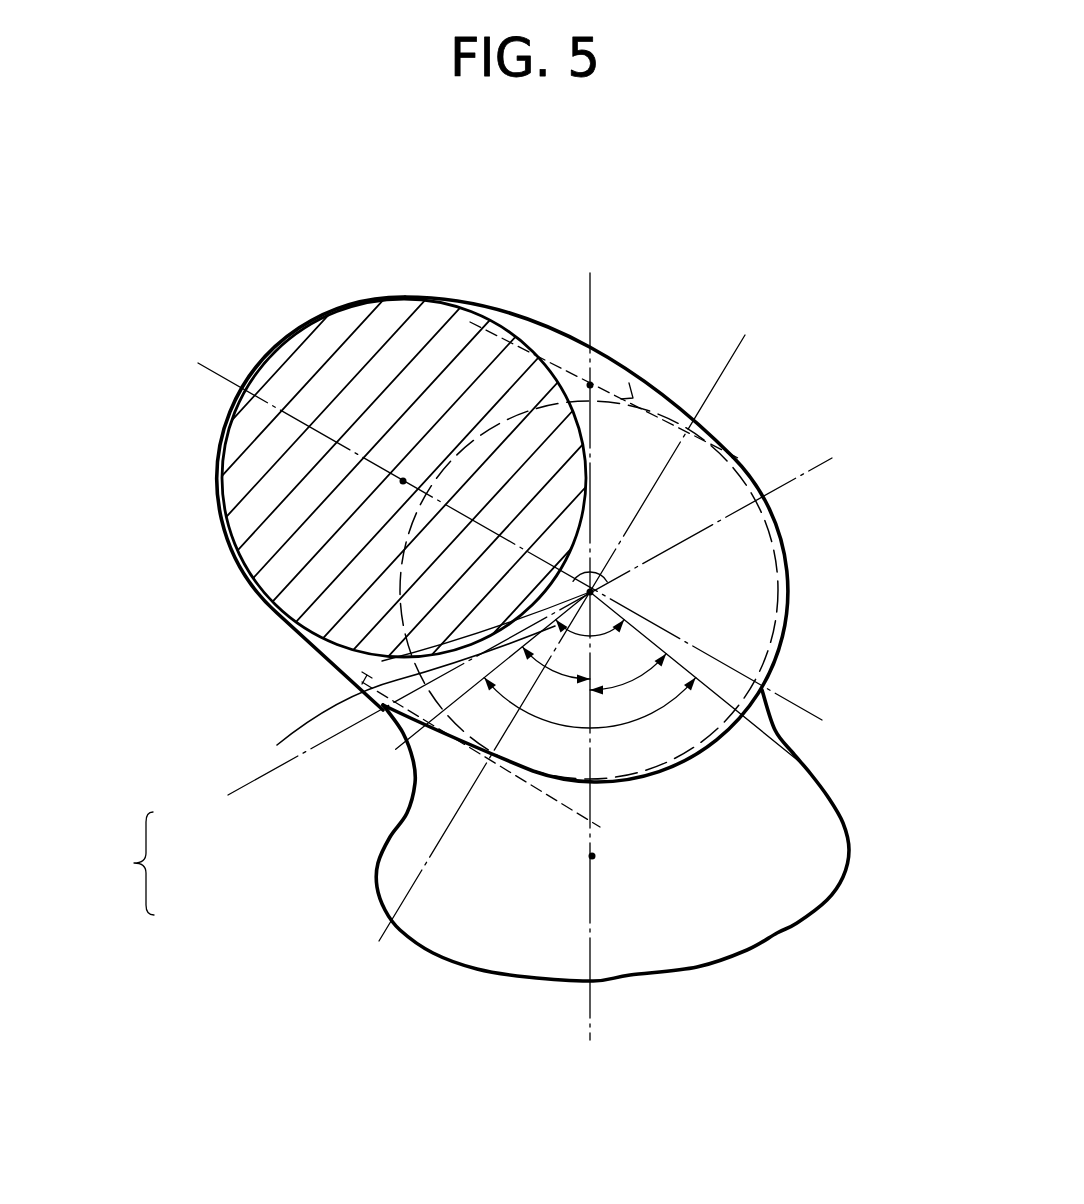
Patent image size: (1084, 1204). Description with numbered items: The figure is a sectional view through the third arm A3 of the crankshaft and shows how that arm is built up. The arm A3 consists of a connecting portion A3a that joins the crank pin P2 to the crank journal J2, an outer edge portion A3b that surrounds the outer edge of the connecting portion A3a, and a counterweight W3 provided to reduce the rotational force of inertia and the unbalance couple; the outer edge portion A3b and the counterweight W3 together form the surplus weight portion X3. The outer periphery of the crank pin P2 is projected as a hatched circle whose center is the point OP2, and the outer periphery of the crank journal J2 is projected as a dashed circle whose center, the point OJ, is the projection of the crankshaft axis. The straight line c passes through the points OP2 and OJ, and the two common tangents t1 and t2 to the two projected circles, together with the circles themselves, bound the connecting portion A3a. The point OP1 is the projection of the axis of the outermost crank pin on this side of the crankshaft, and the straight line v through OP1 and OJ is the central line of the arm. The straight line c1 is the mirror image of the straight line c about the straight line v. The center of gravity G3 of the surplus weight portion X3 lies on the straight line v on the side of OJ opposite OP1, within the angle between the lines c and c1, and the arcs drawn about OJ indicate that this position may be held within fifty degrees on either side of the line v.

The arm A3 is at (243, 574).
The connecting portion A3a is at (382, 662).
The outer edge portion A3b is at (277, 745).
The counterweight W3 is at (433, 813).
The surplus weight portion X3 is at (125, 863).
The crank pin P2 is at (410, 297).
The crank journal J2 is at (778, 504).
The point OP1 is at (600, 384).
The point OP2 is at (375, 502).
The point OJ is at (612, 590).
The center of gravity G3 is at (615, 855).
The straight line v is at (592, 311).
The straight line c is at (229, 378).
The straight line c1 is at (822, 455).
The inclined axis line k is at (740, 364).
The tangent t1 is at (640, 366).
The tangent t2 is at (365, 684).